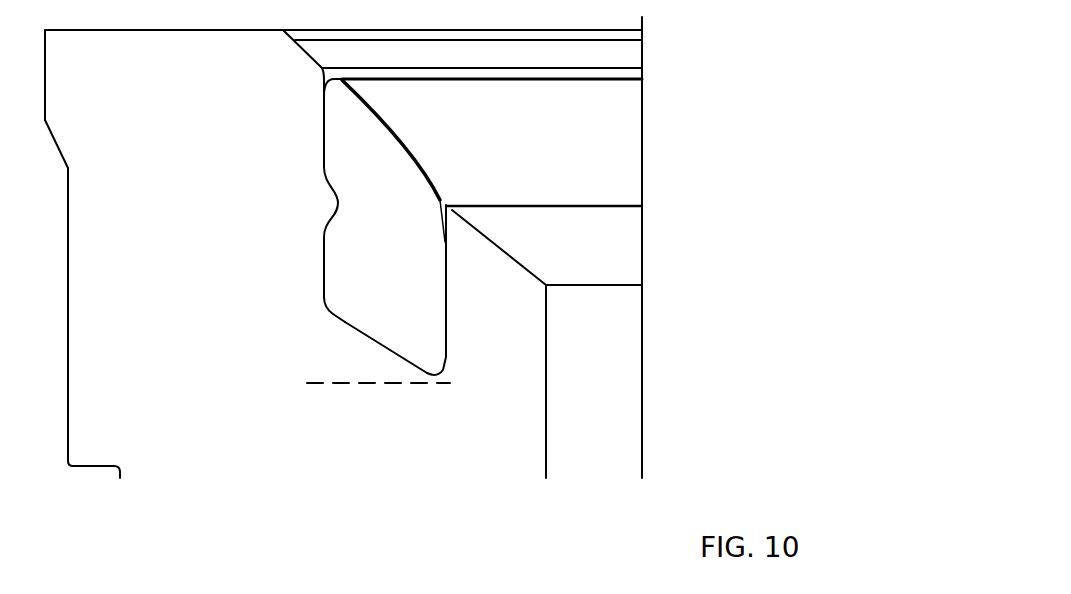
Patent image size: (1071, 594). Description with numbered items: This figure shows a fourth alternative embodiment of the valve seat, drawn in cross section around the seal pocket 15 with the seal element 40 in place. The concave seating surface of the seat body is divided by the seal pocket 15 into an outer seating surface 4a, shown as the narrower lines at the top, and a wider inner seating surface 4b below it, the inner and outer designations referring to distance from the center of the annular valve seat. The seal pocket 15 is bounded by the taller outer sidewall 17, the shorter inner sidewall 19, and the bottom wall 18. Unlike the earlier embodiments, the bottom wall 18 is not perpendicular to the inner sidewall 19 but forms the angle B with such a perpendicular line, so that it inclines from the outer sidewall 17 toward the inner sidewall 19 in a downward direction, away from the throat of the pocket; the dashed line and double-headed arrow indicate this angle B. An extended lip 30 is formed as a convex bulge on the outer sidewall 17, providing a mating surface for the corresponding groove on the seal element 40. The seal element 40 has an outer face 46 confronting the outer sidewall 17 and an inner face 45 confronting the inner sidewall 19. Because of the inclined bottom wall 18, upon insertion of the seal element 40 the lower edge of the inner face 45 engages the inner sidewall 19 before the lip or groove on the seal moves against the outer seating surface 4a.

The seal pocket 15 is at (248, 280).
The extended lip 30 is at (330, 202).
The outer face 46 is at (323, 243).
The outer sidewall 17 is at (323, 293).
The bottom wall 18 is at (375, 348).
The inner sidewall 19 is at (447, 355).
The inner face 45 is at (438, 196).
The seal element 40 is at (612, 127).
The outer seating surface 4a is at (632, 52).
The inner seating surface 4b is at (630, 252).
The angle β B is at (361, 334).